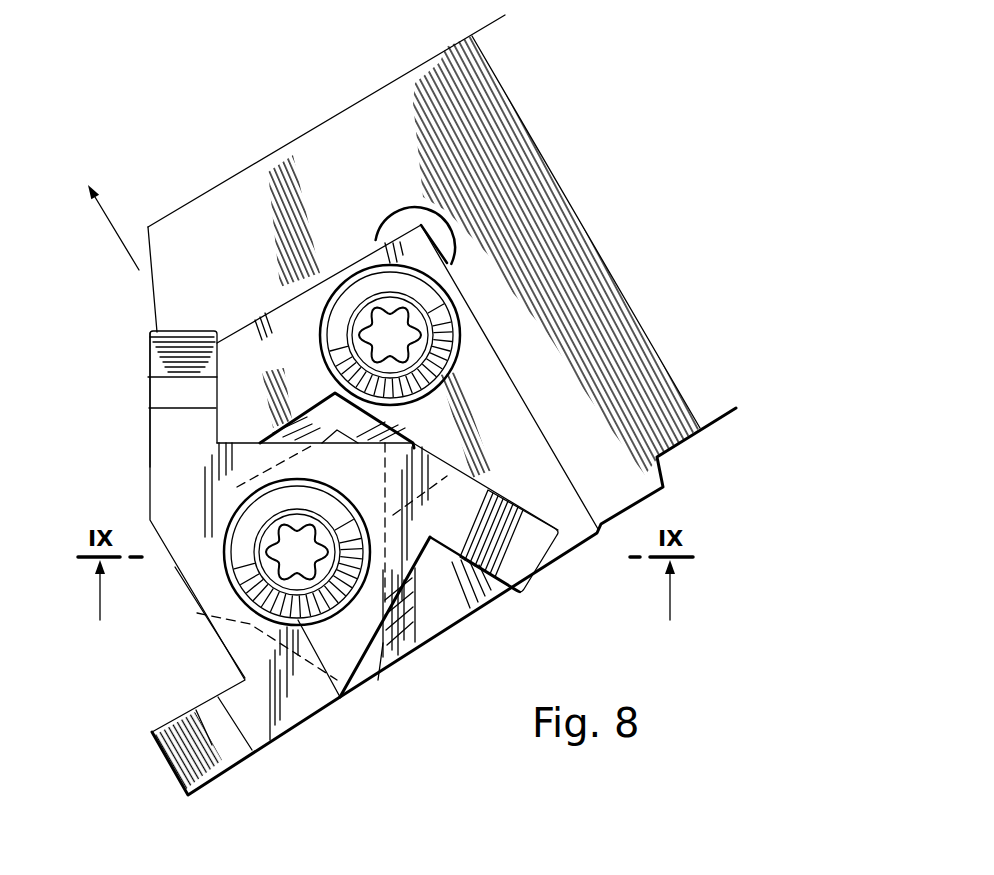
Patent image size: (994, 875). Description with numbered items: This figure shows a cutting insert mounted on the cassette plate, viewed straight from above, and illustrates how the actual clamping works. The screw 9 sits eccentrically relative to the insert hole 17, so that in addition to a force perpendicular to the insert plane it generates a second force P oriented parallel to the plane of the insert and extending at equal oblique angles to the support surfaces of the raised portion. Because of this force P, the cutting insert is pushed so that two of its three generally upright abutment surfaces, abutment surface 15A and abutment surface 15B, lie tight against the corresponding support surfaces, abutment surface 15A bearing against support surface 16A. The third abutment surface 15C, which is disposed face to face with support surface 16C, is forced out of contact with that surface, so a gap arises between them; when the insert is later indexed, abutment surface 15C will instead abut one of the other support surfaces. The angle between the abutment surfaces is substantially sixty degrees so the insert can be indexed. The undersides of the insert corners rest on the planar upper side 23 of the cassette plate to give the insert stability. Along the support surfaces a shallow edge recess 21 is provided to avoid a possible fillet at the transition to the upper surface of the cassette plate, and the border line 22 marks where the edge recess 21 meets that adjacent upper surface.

The screw 9 is at (257, 517).
The abutment surface 15A is at (407, 342).
The abutment surface 15B is at (243, 625).
The abutment surface 15C is at (250, 473).
The support surface 16A is at (401, 640).
The support surface 16C is at (313, 440).
The insert hole 17 is at (340, 697).
The edge recess 21 is at (402, 630).
The border line 22 is at (486, 566).
The planar upper side 23 is at (515, 453).
The second force P is at (110, 212).